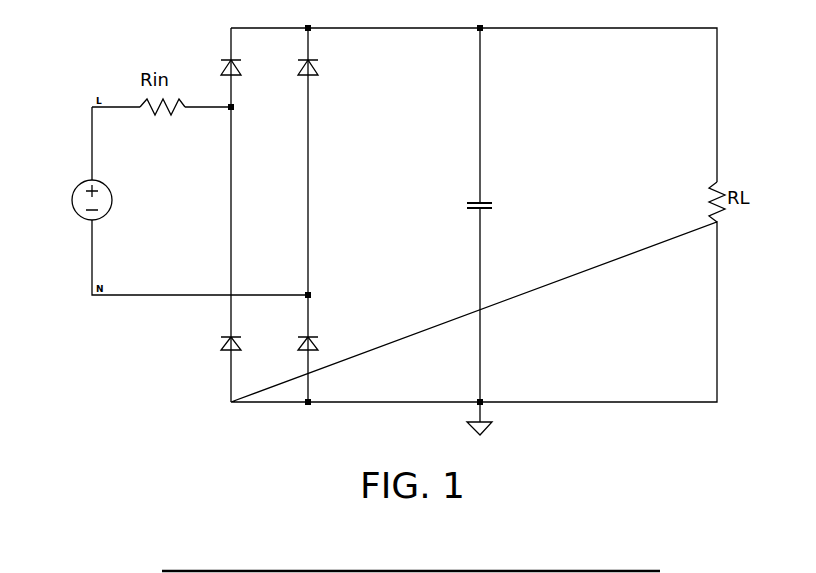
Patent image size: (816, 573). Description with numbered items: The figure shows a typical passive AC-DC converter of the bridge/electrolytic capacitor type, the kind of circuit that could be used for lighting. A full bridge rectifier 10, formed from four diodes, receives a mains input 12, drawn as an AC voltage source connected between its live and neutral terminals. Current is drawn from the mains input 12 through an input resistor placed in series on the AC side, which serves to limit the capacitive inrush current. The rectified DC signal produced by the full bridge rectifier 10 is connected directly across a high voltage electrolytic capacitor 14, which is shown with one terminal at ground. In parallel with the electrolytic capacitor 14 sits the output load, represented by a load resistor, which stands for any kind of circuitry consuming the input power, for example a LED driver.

The full bridge rectifier 10 is at (182, 338).
The mains input 12 is at (70, 187).
The high voltage electrolytic capacitor 14 is at (486, 210).